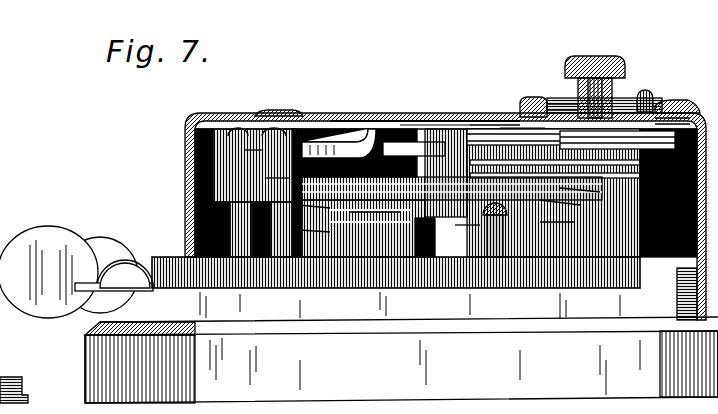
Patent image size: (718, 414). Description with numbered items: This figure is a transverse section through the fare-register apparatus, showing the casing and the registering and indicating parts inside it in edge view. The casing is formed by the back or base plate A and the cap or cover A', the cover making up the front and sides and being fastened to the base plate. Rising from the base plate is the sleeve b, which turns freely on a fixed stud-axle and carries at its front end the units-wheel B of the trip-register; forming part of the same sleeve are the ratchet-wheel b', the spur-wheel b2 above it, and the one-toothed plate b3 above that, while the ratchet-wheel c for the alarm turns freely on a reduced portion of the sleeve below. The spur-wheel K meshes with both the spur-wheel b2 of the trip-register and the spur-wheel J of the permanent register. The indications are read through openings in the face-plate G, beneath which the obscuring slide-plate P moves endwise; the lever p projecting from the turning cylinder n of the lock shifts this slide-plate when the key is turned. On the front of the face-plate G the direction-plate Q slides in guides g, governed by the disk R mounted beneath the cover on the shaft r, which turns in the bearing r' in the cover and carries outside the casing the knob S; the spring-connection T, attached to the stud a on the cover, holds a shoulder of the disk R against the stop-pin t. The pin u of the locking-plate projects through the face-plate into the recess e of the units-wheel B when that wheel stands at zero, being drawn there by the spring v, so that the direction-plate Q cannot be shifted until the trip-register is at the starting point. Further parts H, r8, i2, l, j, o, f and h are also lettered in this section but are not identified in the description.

The back or base plate A is at (401, 360).
The cap or cover A' is at (418, 205).
The knob H is at (178, 314).
The spur-wheel of the permanent register J is at (396, 287).
The turning cylinder of the lock n is at (249, 174).
The slide-plate P is at (342, 121).
The lever or arm p is at (325, 121).
The spur-wheel K is at (446, 173).
The sleeve b is at (553, 193).
The recess e is at (452, 217).
The pin u is at (499, 231).
The ratchet-wheel c is at (540, 240).
The knob or thumb-wheel S is at (592, 56).
The stop-pin t is at (536, 98).
The disk R is at (595, 122).
The bearing r' is at (563, 94).
The knob r8 is at (605, 145).
The sliding plate Q is at (658, 122).
The guides g is at (662, 118).
The spring v is at (672, 123).
The stud or pin a is at (415, 121).
The face-plate G is at (455, 121).
The spring-connection T is at (478, 118).
The units-wheel B is at (517, 115).
The shaft r is at (246, 157).
The pin i2 is at (269, 180).
The link l is at (308, 166).
The link j is at (308, 200).
The pivot o is at (305, 222).
The arm f is at (381, 225).
The arm h is at (463, 233).
The ratchet-wheel b' is at (557, 228).
The spur-wheel b2 is at (568, 208).
The one-toothed plate b3 is at (588, 194).